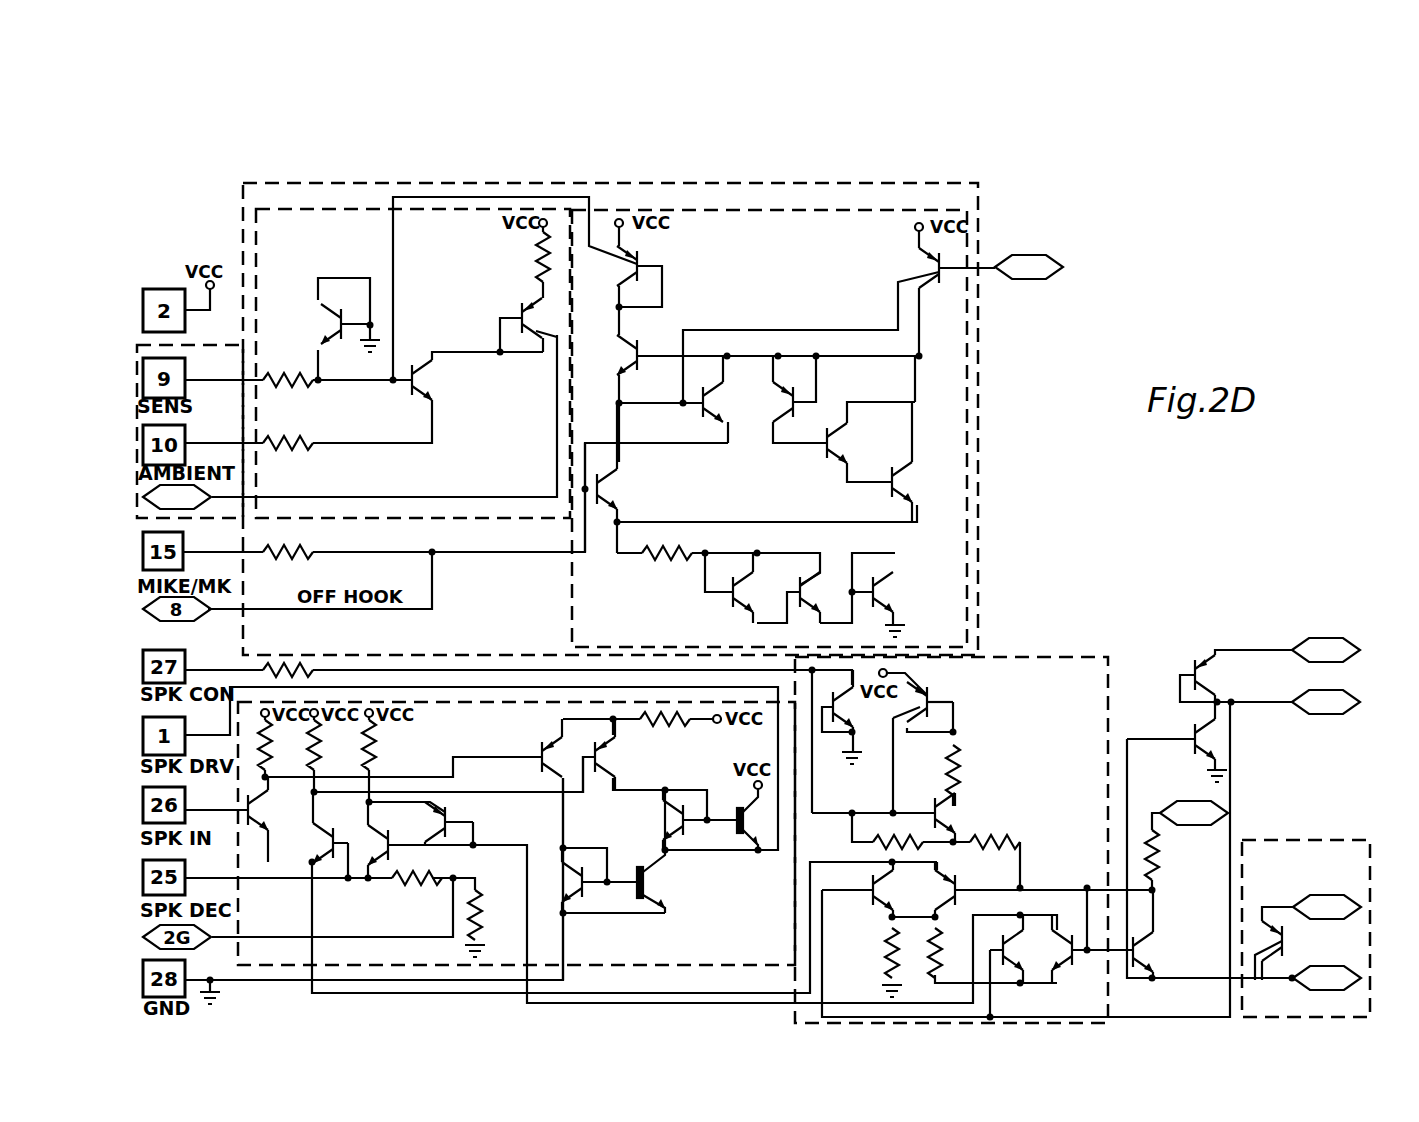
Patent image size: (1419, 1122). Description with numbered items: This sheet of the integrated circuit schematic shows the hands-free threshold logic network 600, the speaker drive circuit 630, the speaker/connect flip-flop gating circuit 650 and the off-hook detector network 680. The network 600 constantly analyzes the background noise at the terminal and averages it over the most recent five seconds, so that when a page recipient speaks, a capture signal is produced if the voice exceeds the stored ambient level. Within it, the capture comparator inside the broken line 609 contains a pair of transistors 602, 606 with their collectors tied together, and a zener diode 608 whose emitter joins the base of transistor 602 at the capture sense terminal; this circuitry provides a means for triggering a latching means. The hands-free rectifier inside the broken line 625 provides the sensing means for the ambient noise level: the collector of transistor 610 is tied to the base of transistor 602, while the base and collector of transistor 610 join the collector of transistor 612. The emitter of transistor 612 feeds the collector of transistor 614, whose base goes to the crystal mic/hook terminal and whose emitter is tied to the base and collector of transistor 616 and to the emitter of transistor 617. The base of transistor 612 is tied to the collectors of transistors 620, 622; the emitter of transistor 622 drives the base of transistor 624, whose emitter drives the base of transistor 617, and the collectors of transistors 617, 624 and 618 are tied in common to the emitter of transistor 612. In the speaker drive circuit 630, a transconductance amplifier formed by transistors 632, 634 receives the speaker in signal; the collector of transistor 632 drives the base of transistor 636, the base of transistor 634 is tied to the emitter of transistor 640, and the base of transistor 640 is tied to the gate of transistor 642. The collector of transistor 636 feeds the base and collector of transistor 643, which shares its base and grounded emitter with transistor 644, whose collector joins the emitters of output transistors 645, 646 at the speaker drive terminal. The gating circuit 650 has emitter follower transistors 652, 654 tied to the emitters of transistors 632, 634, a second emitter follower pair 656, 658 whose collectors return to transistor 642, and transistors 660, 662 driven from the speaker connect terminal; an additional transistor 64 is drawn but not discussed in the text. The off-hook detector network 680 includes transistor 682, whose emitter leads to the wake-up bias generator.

The hands-free threshold logic network 600 is at (244, 226).
The broken line circuitry 609 is at (324, 212).
The transistor 602 is at (420, 400).
The transistor 606 is at (524, 304).
The zener diode 608 is at (333, 329).
The broken line circuitry 625 is at (782, 213).
The transistor 610 is at (651, 277).
The transistor 612 is at (637, 355).
The transistor 614 is at (625, 478).
The transistor 616 is at (819, 595).
The transistor 617 is at (919, 462).
The transistor 618 is at (924, 263).
The transistor 620 is at (728, 399).
The transistor 622 is at (783, 399).
The transistor 624 is at (871, 442).
The speaker drive circuit 630 is at (662, 970).
The transistor 632 is at (277, 819).
The transistor 634 is at (337, 827).
The transistor 636 is at (537, 744).
The transistor 640 is at (394, 840).
The transistor 642 is at (458, 820).
The transistor 643 is at (570, 884).
The transistor 644 is at (645, 885).
The transistor 645 is at (683, 824).
The transistor 646 is at (729, 811).
The speaker/connect flip-flop gating circuit 650 is at (1018, 656).
The transistor 652 is at (873, 900).
The transistor 654 is at (949, 881).
The transistor 656 is at (1020, 949).
The transistor 658 is at (1072, 970).
The transistor 660 is at (942, 694).
The transistor 662 is at (963, 817).
The transistor 64 is at (1154, 934).
The off-hook detector network 680 is at (1302, 841).
The transistor 682 is at (1288, 945).